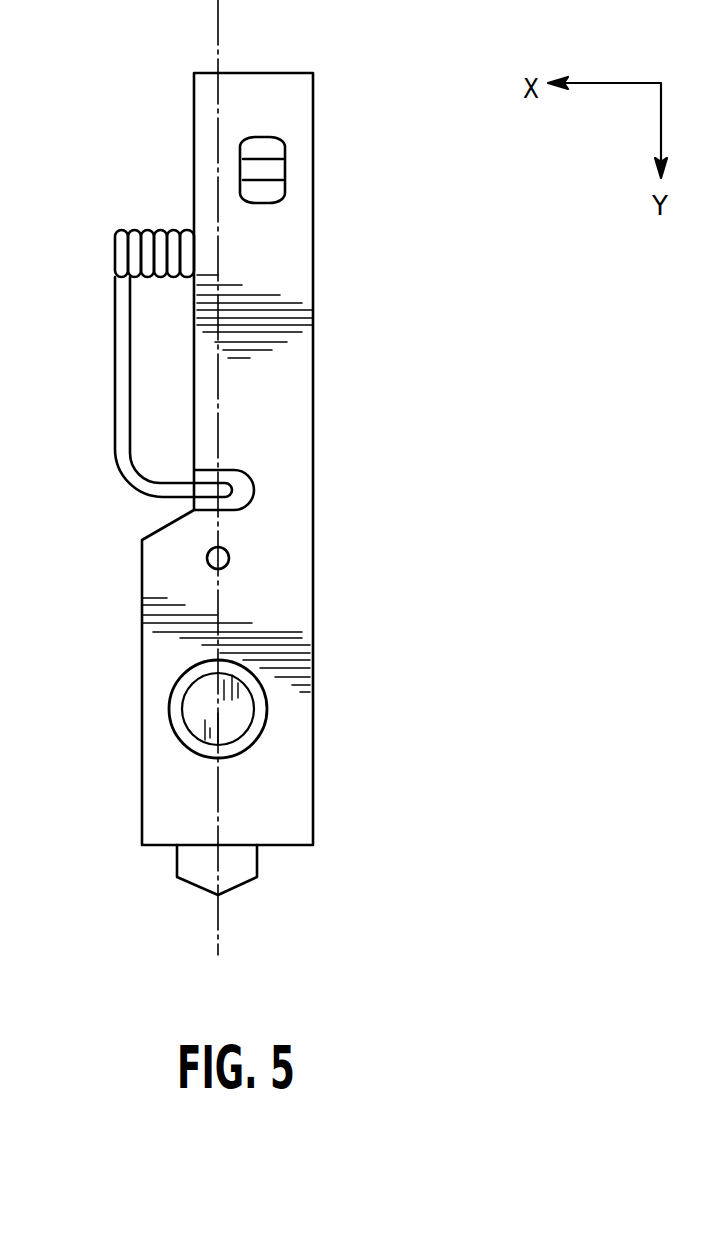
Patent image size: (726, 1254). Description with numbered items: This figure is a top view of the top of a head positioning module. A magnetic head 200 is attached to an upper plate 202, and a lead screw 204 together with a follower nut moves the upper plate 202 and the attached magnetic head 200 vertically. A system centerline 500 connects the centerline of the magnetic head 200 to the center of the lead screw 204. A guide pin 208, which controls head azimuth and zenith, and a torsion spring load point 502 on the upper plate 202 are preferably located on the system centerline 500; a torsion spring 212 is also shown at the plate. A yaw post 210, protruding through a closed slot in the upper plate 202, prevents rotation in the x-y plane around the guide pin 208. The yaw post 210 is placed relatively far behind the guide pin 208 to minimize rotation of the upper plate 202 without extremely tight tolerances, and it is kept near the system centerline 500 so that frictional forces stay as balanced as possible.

The magnetic head 200 is at (258, 878).
The upper plate 202 is at (313, 330).
The lead screw 204 is at (248, 718).
The guide pin 208 is at (229, 555).
The yaw post 210 is at (285, 170).
The spring 212 is at (135, 230).
The system centerline 500 is at (218, 915).
The torsion spring load point 502 is at (240, 470).